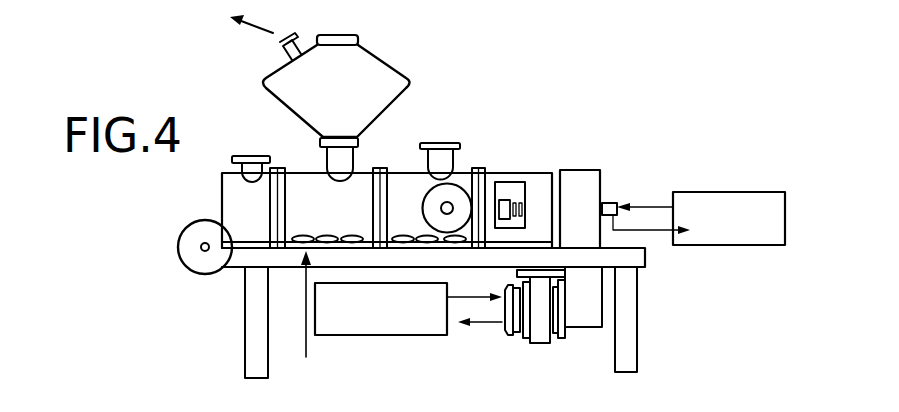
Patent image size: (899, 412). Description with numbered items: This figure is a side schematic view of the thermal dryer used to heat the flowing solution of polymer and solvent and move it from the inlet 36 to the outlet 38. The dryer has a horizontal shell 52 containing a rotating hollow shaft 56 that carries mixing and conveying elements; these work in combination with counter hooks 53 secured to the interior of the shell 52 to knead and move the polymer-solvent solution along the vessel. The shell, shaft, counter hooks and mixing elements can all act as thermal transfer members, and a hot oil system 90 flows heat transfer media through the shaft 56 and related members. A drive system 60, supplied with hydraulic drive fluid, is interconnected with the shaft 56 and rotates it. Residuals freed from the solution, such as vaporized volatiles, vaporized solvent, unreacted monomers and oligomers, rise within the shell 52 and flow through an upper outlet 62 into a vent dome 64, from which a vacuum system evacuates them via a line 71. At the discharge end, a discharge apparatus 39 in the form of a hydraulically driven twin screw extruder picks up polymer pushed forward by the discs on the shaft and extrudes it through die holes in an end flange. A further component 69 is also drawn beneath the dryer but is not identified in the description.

The inlet 36 is at (460, 208).
The outlet 38 is at (232, 240).
The discharge apparatus 39 is at (178, 248).
The shell 52 is at (458, 172).
The counter hooks 53 is at (307, 321).
The rotating hollow shaft 56 is at (613, 200).
The drive system 60 is at (592, 300).
The upper outlet 62 is at (327, 173).
The vent dome 64 is at (367, 58).
The power supply 69 is at (410, 336).
The line 71 is at (262, 38).
The hot oil system 90 is at (738, 192).